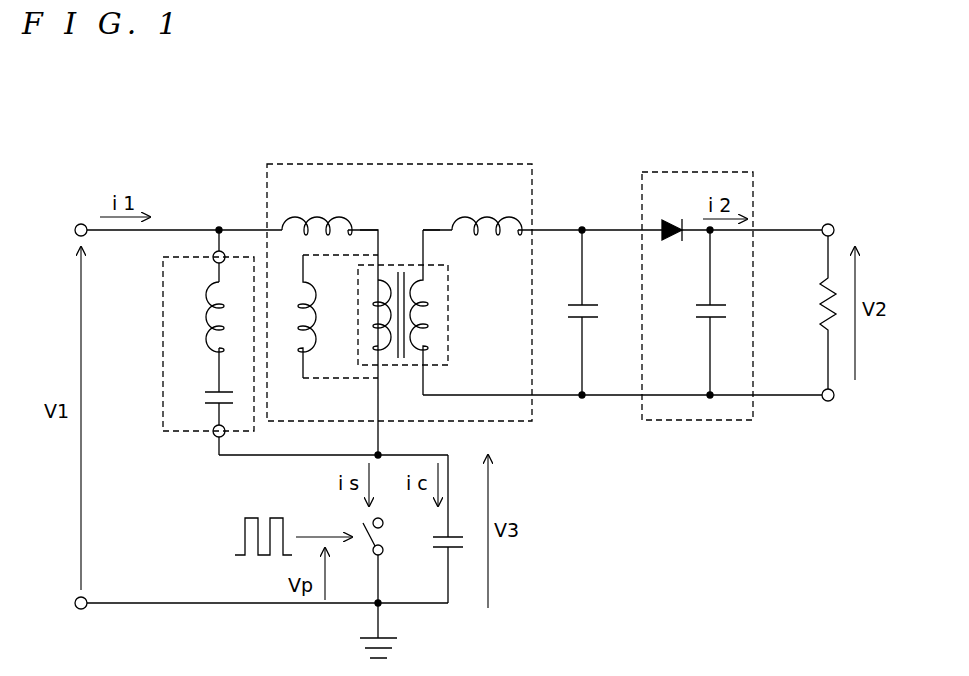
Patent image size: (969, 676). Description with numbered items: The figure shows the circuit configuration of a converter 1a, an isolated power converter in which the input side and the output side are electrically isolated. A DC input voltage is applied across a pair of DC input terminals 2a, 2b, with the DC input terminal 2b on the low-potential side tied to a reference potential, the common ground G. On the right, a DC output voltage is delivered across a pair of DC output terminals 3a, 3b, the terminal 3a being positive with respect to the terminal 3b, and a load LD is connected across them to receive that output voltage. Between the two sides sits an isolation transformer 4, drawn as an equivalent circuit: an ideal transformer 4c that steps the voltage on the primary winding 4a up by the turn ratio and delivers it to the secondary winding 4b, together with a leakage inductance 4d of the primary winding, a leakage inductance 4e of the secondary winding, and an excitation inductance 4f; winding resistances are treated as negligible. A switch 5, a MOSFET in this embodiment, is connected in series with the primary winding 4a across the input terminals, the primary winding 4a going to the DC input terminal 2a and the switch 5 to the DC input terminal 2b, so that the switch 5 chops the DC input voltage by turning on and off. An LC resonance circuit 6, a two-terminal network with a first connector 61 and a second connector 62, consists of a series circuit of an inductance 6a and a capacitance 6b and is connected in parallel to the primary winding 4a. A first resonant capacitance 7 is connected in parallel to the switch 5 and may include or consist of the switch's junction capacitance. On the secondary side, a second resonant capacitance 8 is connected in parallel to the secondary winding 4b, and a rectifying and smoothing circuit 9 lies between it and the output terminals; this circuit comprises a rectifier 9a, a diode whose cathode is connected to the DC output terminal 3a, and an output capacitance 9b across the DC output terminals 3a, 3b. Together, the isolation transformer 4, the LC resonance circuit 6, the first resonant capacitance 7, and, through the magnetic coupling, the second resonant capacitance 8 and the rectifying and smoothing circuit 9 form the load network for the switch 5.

The converter 1a is at (345, 98).
The DC input terminal 2a is at (84, 223).
The DC input terminal 2b is at (84, 609).
The DC output terminal 3a is at (828, 223).
The DC output terminal 3b is at (830, 401).
The isolation transformer 4 is at (421, 163).
The primary winding 4a is at (366, 226).
The secondary winding 4b is at (432, 226).
The ideal transformer 4c is at (448, 300).
The leakage inductance 4d is at (308, 220).
The leakage inductance 4e is at (478, 220).
The excitation inductance 4f is at (298, 338).
The switch 5 is at (384, 532).
The LC resonance circuit 6 is at (158, 355).
The inductance 6a is at (205, 330).
The capacitance 6b is at (207, 392).
The first connector 61 is at (212, 256).
The second connector 62 is at (213, 435).
The first resonant capacitance 7 is at (453, 535).
The second resonant capacitance 8 is at (592, 305).
The rectifying and smoothing circuit 9 is at (680, 171).
The rectifier 9a is at (670, 222).
The output capacitance 9b is at (720, 305).
The common ground G is at (385, 636).
The load LD is at (818, 303).